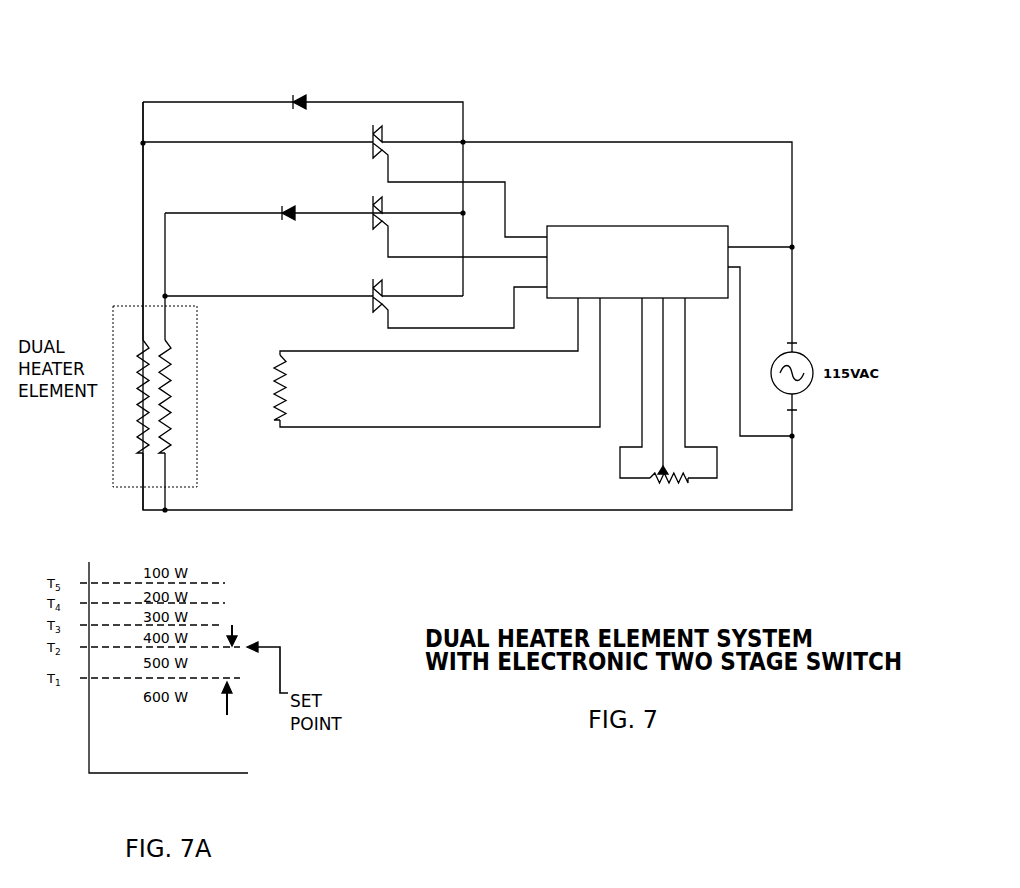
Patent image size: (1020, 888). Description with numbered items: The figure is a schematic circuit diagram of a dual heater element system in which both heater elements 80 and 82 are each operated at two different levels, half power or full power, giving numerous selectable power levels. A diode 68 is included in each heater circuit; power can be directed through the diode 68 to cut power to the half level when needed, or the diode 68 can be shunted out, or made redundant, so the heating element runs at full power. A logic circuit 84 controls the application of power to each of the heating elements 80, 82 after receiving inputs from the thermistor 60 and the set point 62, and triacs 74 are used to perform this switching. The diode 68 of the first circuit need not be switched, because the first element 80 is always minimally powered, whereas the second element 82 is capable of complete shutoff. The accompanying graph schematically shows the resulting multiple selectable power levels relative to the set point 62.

The thermistor 60 is at (273, 380).
The set point potentiometer 62 is at (650, 480).
The diode 68 is at (318, 100).
The triac 74 is at (385, 135).
The 200 watt heater element 80 is at (135, 392).
The 400 watt heater element 82 is at (172, 370).
The comparator circuit 84 is at (652, 237).